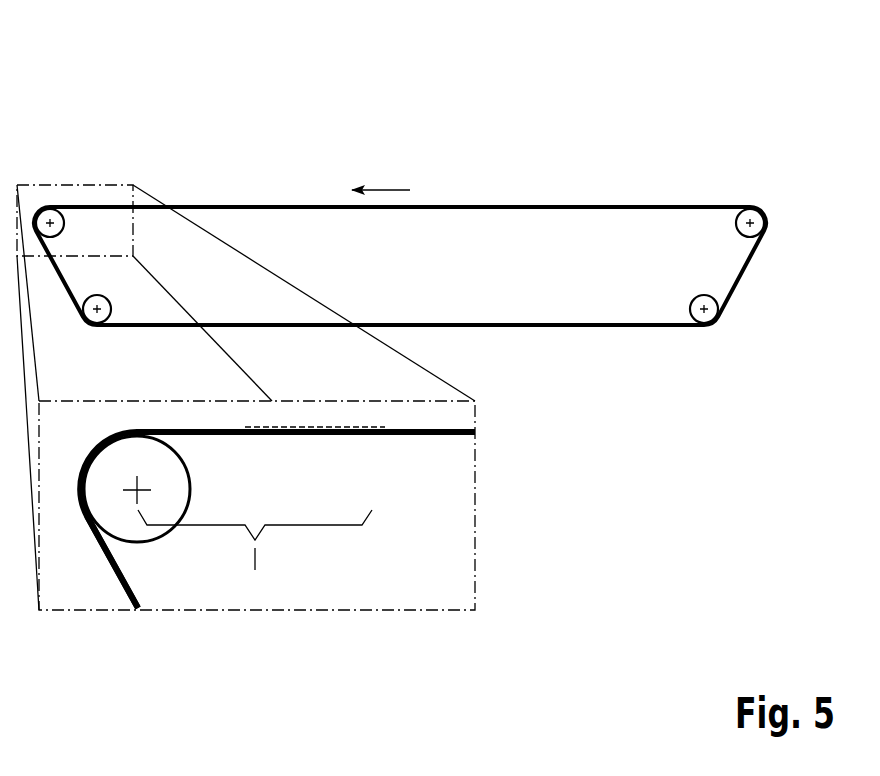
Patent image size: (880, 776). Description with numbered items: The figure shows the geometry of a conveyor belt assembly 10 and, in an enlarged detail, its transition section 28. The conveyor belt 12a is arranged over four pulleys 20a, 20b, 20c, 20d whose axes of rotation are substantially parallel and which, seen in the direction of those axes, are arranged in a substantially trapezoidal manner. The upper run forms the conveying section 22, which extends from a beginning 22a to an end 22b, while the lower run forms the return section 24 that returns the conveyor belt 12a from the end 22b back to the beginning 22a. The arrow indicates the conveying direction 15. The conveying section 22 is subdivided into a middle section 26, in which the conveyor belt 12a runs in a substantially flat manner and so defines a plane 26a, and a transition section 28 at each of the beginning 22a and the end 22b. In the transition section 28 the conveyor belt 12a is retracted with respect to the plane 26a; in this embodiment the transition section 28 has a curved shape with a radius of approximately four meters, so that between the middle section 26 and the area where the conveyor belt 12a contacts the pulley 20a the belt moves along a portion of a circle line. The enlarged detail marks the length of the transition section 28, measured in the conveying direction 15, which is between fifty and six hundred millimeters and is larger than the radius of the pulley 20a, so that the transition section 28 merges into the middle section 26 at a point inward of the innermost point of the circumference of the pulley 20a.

The conveyor belt assembly 10 is at (447, 361).
The conveyor belt 12a is at (107, 570).
The conveying direction 15 is at (385, 190).
The pulley 20a is at (45, 211).
The pulley 20b is at (104, 321).
The pulley 20c is at (719, 320).
The pulley 20d is at (766, 218).
The conveying section 22 is at (526, 205).
The beginning of the conveying section 22a is at (746, 201).
The end of the conveying section 22b is at (88, 181).
The return section 24 is at (596, 343).
The middle section 26 is at (464, 188).
The plane 26a is at (288, 425).
The transition section 28 is at (118, 204).